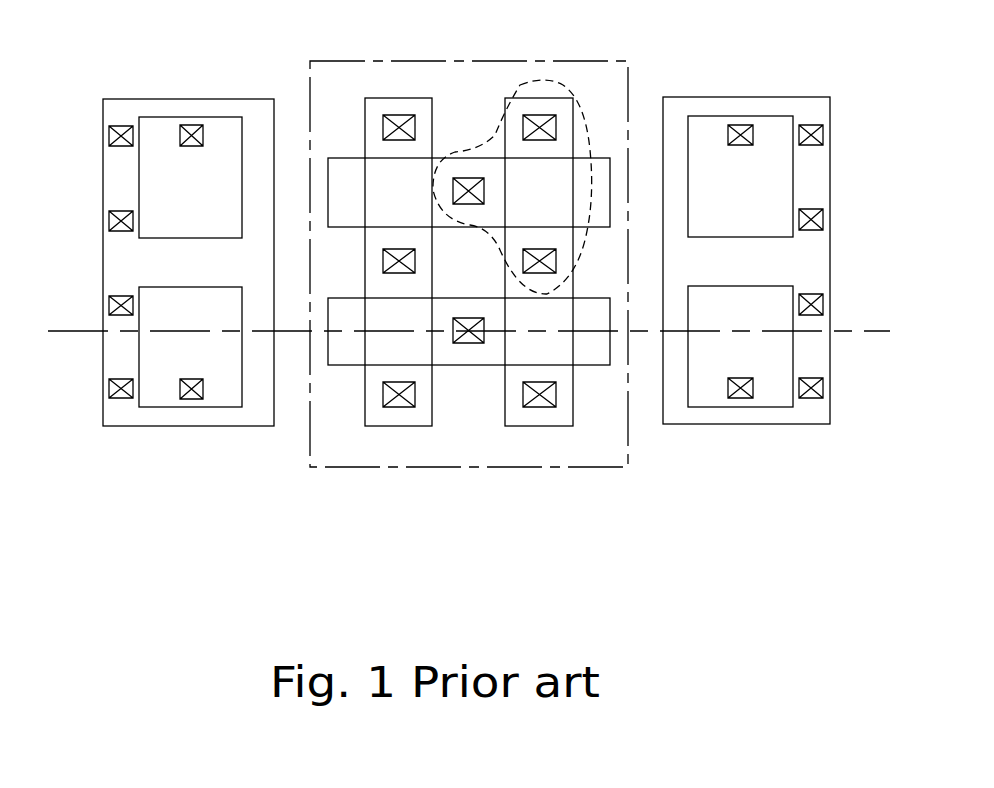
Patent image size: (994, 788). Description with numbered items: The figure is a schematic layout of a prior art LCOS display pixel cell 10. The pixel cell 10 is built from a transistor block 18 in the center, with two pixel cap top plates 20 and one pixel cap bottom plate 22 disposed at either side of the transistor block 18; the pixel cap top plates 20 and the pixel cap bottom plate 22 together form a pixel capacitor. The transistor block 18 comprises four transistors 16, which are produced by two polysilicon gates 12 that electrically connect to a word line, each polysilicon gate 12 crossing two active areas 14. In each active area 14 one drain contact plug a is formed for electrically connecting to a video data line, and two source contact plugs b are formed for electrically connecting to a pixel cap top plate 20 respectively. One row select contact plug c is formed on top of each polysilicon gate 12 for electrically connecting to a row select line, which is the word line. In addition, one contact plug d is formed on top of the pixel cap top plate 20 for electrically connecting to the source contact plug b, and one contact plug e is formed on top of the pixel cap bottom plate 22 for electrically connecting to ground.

The LCOS display pixel cell 10 is at (855, 468).
The polysilicon gate 12 is at (347, 197).
The active area 14 is at (397, 107).
The transistor 16 is at (562, 88).
The transistor block 18 is at (567, 450).
The pixel cap top plate 20 is at (212, 195).
The pixel cap bottom plate 22 is at (128, 172).
The drain contact plug a is at (523, 261).
The source contact plug b is at (383, 128).
The row select contact plug c is at (468, 162).
The contact plug d is at (193, 125).
The contact plug e is at (109, 136).